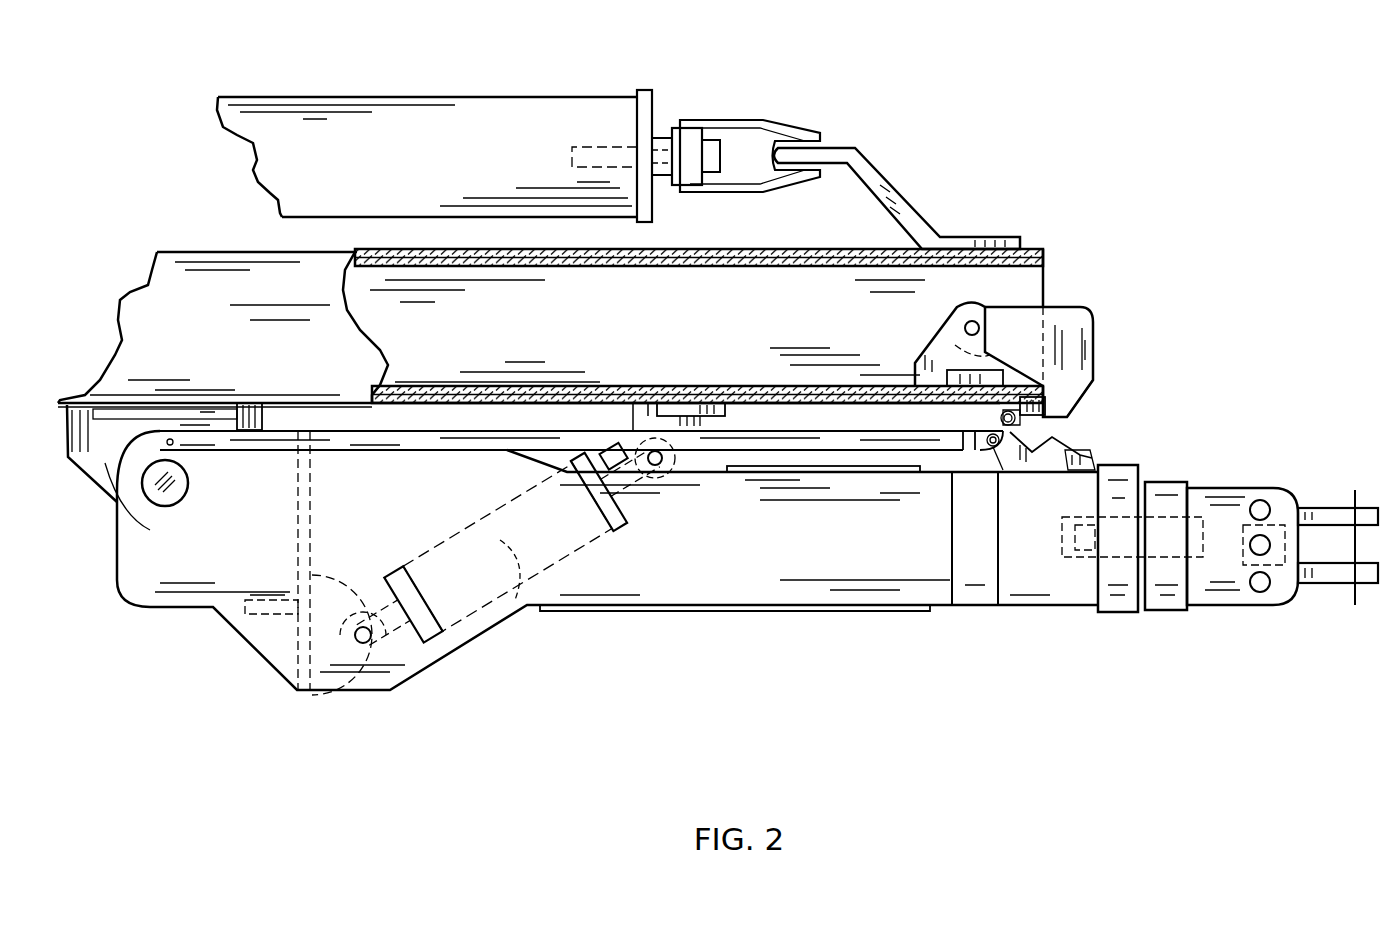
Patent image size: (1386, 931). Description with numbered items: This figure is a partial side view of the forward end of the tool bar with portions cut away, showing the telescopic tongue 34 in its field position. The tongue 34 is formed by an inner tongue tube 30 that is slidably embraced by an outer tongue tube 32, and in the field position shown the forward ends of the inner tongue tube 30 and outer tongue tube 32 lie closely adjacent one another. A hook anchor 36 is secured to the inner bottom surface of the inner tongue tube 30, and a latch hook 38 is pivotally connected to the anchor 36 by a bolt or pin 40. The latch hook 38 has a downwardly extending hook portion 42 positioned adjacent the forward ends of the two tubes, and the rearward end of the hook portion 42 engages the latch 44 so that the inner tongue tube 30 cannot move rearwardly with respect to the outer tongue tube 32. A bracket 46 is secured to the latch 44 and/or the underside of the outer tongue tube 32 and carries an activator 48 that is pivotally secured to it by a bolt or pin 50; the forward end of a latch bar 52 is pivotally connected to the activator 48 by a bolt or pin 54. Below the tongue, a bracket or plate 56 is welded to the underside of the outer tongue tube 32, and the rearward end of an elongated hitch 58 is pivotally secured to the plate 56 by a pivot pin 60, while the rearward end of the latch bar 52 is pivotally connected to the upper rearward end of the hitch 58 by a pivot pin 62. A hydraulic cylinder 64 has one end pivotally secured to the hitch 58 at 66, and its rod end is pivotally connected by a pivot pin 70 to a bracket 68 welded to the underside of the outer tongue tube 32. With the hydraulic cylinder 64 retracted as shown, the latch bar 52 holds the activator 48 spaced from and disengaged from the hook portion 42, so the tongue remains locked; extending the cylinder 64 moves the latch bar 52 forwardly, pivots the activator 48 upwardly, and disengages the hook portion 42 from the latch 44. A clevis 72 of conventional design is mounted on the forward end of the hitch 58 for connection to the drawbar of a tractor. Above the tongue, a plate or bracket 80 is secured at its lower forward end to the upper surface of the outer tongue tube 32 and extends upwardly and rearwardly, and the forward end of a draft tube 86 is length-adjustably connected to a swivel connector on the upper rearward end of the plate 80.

The inner tongue tube 30 is at (1010, 280).
The outer tongue tube 32 is at (1043, 249).
The telescopic tongue 34 is at (198, 243).
The hook anchor 36 is at (935, 352).
The latch hook 38 is at (1088, 318).
The bolt or pin 40 is at (966, 325).
The hook portion 42 is at (1070, 400).
The latch 44 is at (1035, 405).
The bracket 46 is at (1012, 422).
The activator 48 is at (1082, 456).
The bolt or pin 50 is at (1005, 414).
The latch bar 52 is at (778, 432).
The bolt or pin 54 is at (990, 444).
The bracket or plate 56 is at (105, 465).
The hitch 58 is at (776, 578).
The pivot pin 60 is at (172, 484).
The pivot pin 62 is at (173, 444).
The hydraulic cylinder 64 is at (508, 606).
The pivot connection 66 is at (366, 650).
The bracket 68 is at (700, 402).
The pivot pin 70 is at (660, 475).
The clevis 72 is at (1335, 505).
The plate or bracket 80 is at (885, 172).
The draft tube 86 is at (467, 103).